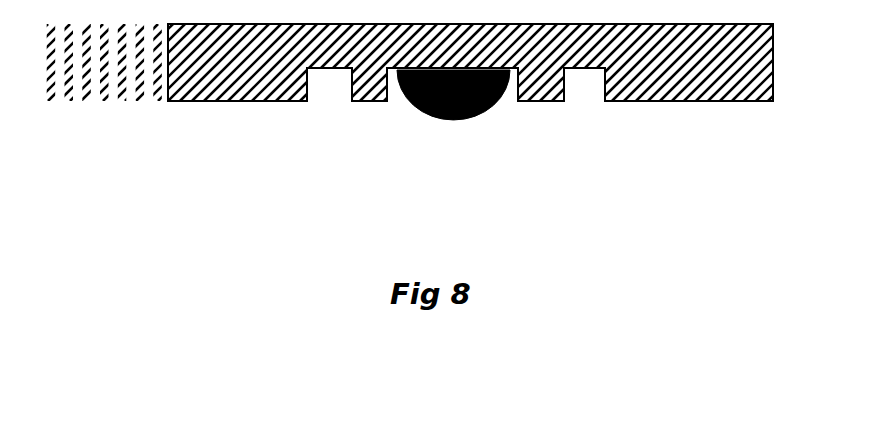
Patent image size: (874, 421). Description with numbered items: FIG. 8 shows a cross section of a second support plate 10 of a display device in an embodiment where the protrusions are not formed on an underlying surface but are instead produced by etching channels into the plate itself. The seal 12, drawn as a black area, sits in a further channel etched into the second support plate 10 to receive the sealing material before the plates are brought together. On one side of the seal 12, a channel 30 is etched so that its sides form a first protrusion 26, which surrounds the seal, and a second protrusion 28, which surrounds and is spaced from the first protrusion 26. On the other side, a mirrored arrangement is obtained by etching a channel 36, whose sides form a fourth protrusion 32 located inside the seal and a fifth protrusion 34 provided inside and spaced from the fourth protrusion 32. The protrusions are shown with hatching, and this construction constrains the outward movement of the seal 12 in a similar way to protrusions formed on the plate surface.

The second support plate 10 is at (773, 66).
The seal 12 is at (453, 120).
The first protrusion 26 is at (540, 100).
The second protrusion 28 is at (670, 100).
The channel 30 is at (587, 100).
The fourth protrusion 32 is at (373, 100).
The fifth protrusion 34 is at (241, 101).
The channel 36 is at (328, 100).